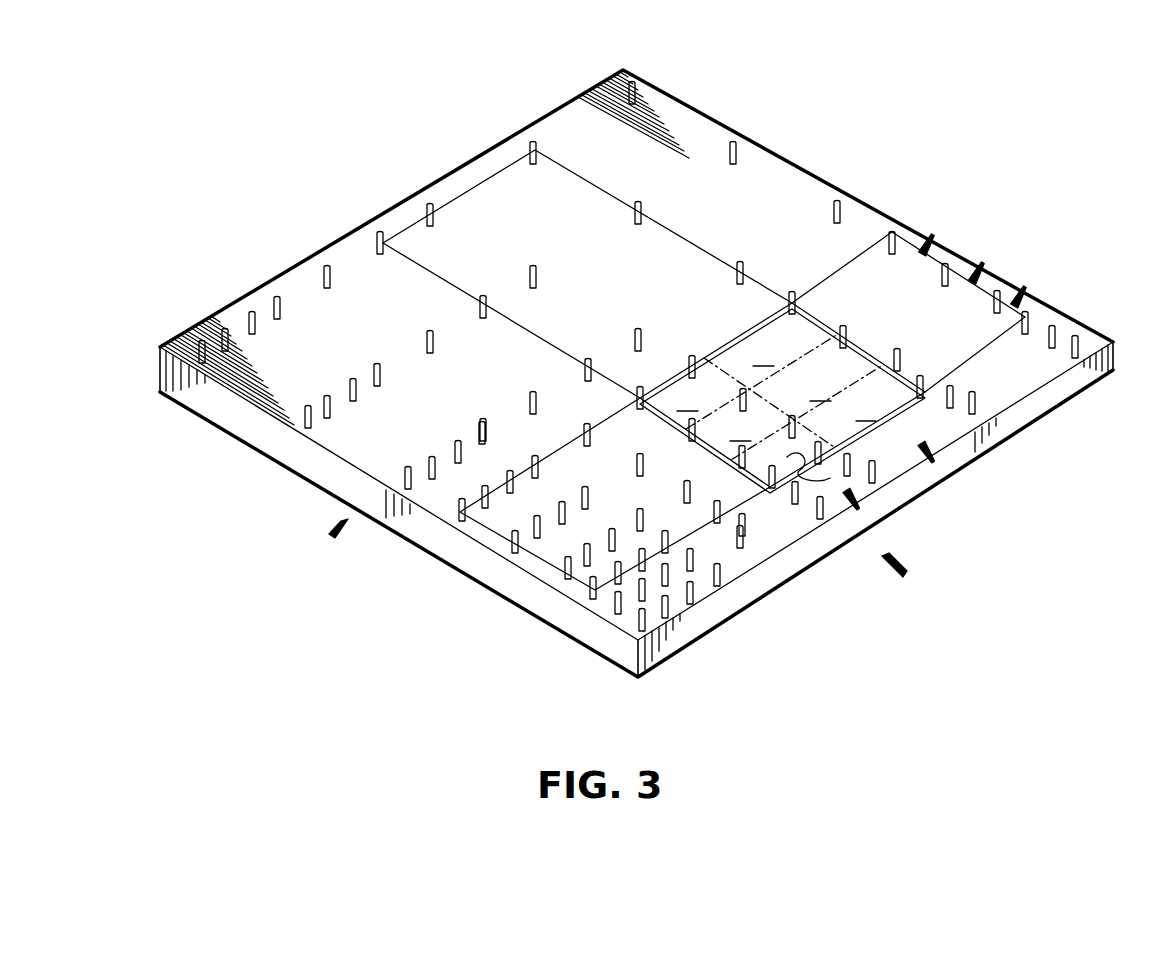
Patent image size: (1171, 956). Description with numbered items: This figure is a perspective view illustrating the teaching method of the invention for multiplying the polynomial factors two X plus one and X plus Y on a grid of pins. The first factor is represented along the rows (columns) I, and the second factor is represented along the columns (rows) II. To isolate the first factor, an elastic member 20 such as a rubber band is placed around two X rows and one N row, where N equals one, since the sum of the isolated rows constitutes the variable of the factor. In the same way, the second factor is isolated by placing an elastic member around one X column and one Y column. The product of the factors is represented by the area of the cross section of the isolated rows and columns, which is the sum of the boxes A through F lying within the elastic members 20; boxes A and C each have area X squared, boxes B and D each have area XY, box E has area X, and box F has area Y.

The elastic member 20 is at (817, 278).
The X row/column X is at (933, 236).
The Y column/row Y is at (936, 462).
The N row N is at (1025, 287).
The rows (columns) I is at (334, 536).
The columns (rows) II is at (904, 574).